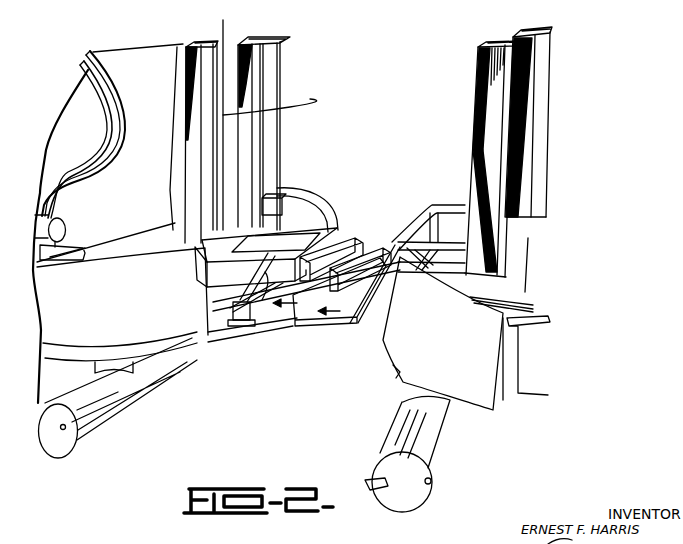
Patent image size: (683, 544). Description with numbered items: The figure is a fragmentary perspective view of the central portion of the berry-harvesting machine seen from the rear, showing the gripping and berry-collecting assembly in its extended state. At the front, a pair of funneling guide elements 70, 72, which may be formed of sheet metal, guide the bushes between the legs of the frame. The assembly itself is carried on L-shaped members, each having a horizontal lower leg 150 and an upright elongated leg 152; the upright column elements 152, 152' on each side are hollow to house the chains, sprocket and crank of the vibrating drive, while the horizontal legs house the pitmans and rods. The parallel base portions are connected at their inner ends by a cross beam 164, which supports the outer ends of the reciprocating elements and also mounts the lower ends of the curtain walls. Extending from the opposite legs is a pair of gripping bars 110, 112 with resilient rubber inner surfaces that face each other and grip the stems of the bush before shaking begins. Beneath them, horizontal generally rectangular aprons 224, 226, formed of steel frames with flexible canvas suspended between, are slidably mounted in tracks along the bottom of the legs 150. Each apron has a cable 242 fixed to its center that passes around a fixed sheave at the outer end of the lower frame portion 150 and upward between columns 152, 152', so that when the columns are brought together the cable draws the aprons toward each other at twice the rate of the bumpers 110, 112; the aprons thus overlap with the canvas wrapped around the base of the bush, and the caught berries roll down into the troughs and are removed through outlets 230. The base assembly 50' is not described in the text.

The upright elongated leg 152 is at (188, 125).
The upright column element 152' is at (290, 130).
The cable 242 is at (283, 125).
The base assembly 50' is at (284, 225).
The cross beam 164 is at (337, 237).
The gripping bar 110 is at (332, 240).
The gripping bar 112 is at (399, 222).
The horizontal lower leg 150 is at (236, 312).
The apron 226 is at (277, 270).
The apron 224 is at (330, 323).
The funneling guide element 70 is at (188, 335).
The outlet 230 is at (92, 411).
The funneling guide element 72 is at (420, 370).